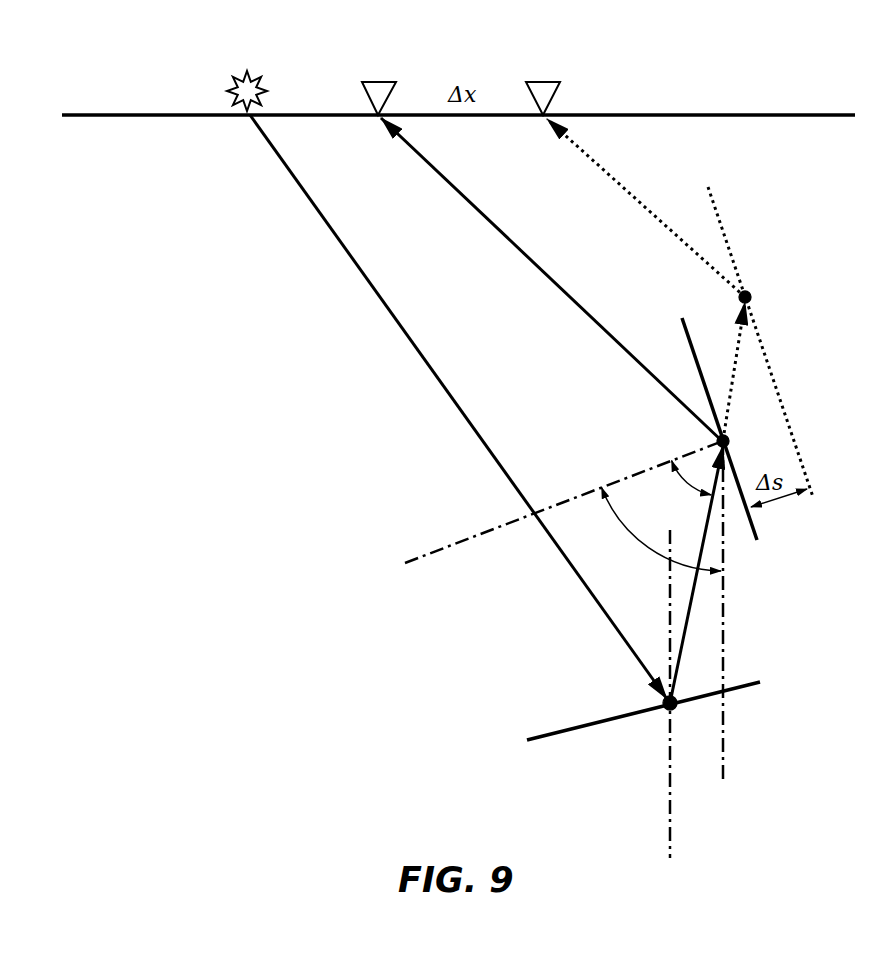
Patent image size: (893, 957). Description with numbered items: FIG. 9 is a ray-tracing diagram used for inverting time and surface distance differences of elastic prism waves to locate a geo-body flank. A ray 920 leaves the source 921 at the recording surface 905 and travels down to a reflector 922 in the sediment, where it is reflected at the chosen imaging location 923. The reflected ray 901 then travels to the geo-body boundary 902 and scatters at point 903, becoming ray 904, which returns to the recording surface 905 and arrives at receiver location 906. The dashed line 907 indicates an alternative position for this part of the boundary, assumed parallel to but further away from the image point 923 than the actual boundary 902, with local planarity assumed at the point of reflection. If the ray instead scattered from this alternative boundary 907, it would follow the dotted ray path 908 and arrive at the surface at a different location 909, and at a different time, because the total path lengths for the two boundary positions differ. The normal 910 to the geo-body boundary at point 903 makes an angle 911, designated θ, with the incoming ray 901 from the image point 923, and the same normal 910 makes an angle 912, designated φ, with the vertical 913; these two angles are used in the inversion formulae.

The reflected ray 901 is at (690, 604).
The geo-body boundary 902 is at (760, 531).
The scattering point 903 is at (758, 430).
The scattered ray 904 is at (511, 246).
The recording surface 905 is at (120, 114).
The receiver location 906 is at (370, 82).
The alternative boundary 907 is at (789, 426).
The dotted ray path 908 is at (638, 200).
The different location 909 is at (550, 82).
The normal to the geo-body boundary 910 is at (437, 548).
The angle θ 911 is at (693, 503).
The angle φ 912 is at (646, 548).
The vertical 913 is at (726, 750).
The ray 920 is at (379, 298).
The source 921 is at (233, 80).
The reflector 922 is at (573, 726).
The imaging location 923 is at (664, 712).